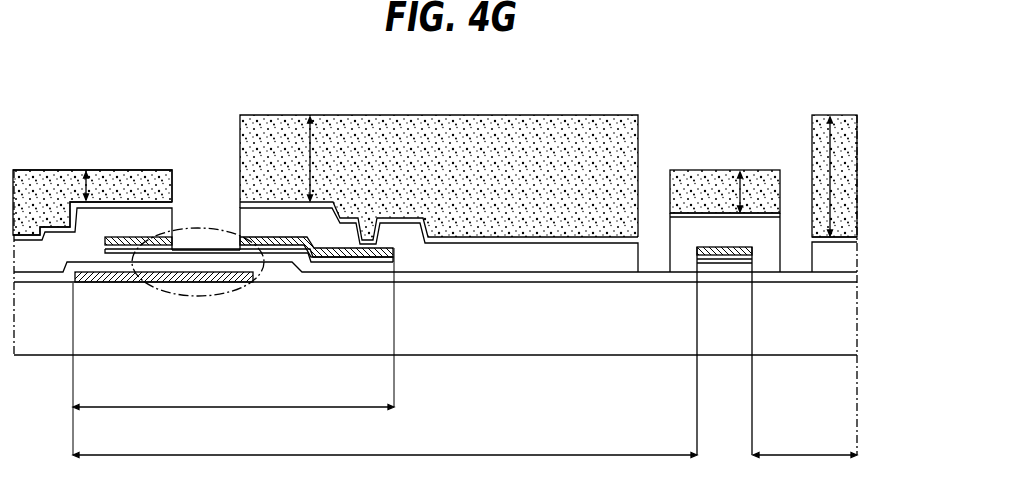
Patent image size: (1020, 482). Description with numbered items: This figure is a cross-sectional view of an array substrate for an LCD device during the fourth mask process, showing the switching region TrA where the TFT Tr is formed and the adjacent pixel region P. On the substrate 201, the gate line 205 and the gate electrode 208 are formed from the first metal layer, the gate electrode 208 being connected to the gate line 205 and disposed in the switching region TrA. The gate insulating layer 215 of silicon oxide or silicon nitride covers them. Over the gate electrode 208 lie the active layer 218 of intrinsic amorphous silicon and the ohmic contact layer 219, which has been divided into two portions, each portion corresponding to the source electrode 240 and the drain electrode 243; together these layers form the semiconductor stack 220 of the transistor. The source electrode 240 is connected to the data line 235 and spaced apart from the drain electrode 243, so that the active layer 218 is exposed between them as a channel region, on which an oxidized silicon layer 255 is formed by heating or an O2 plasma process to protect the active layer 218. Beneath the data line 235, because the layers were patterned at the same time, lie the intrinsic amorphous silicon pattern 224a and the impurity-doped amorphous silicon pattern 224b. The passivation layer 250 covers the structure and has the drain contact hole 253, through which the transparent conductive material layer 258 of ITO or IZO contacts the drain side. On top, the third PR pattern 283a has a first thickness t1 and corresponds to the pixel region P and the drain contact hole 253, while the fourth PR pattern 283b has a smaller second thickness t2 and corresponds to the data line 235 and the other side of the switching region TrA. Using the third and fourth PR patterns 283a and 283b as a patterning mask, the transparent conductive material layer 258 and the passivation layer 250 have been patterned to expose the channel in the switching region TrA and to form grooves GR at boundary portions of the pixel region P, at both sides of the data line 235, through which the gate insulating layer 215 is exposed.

The substrate 201 is at (808, 324).
The gate line 205 is at (90, 283).
The gate electrode 208 is at (182, 283).
The gate insulating layer 215 is at (538, 283).
The active layer 218 is at (257, 283).
The ohmic contact layer 219 is at (280, 283).
The semiconductor layer 220 is at (250, 322).
The intrinsic amorphous silicon pattern 224a is at (712, 266).
The impurity-doped amorphous silicon pattern 224b is at (732, 261).
The data line 235 is at (703, 247).
The source electrode 240 is at (133, 243).
The drain electrode 243 is at (268, 243).
The passivation layer 250 is at (102, 212).
The drain contact hole 253 is at (367, 212).
The oxidized silicon layer 255 is at (202, 250).
The transparent conductive material layer 258 is at (122, 200).
The third PR pattern 283a is at (465, 127).
The fourth PR pattern 283b is at (47, 182).
The TFT Tr is at (157, 284).
The switching region TrA is at (233, 351).
The pixel region P is at (465, 443).
The grooves GR is at (648, 227).
The first thickness t1 is at (578, 176).
The second thickness t2 is at (404, 192).